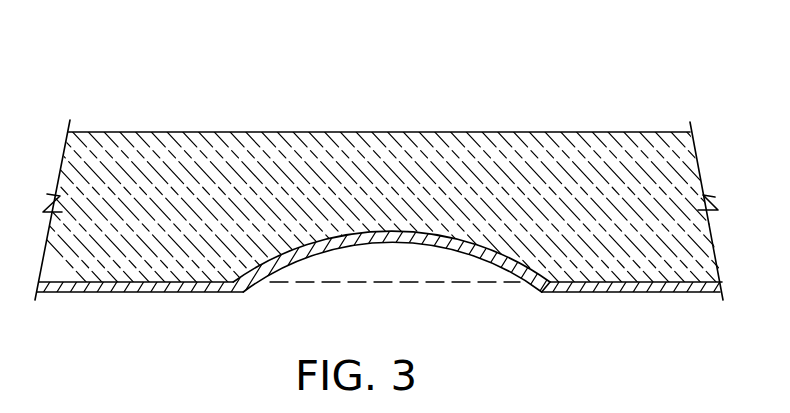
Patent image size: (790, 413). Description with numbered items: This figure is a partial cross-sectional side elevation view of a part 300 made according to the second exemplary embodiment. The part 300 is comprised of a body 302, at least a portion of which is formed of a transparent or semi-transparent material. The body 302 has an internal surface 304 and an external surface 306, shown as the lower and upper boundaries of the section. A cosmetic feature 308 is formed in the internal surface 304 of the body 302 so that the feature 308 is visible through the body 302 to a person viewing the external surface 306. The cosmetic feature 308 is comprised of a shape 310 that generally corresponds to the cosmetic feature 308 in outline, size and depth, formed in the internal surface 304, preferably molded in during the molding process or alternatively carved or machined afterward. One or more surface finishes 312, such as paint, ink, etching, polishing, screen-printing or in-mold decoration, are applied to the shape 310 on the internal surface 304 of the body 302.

The part 300 is at (448, 108).
The body 302 is at (338, 150).
The internal surface 304 is at (160, 282).
The external surface 306 is at (158, 132).
The cosmetic feature 308 is at (375, 243).
The shape 310 is at (445, 263).
The surface finish 312 is at (532, 283).